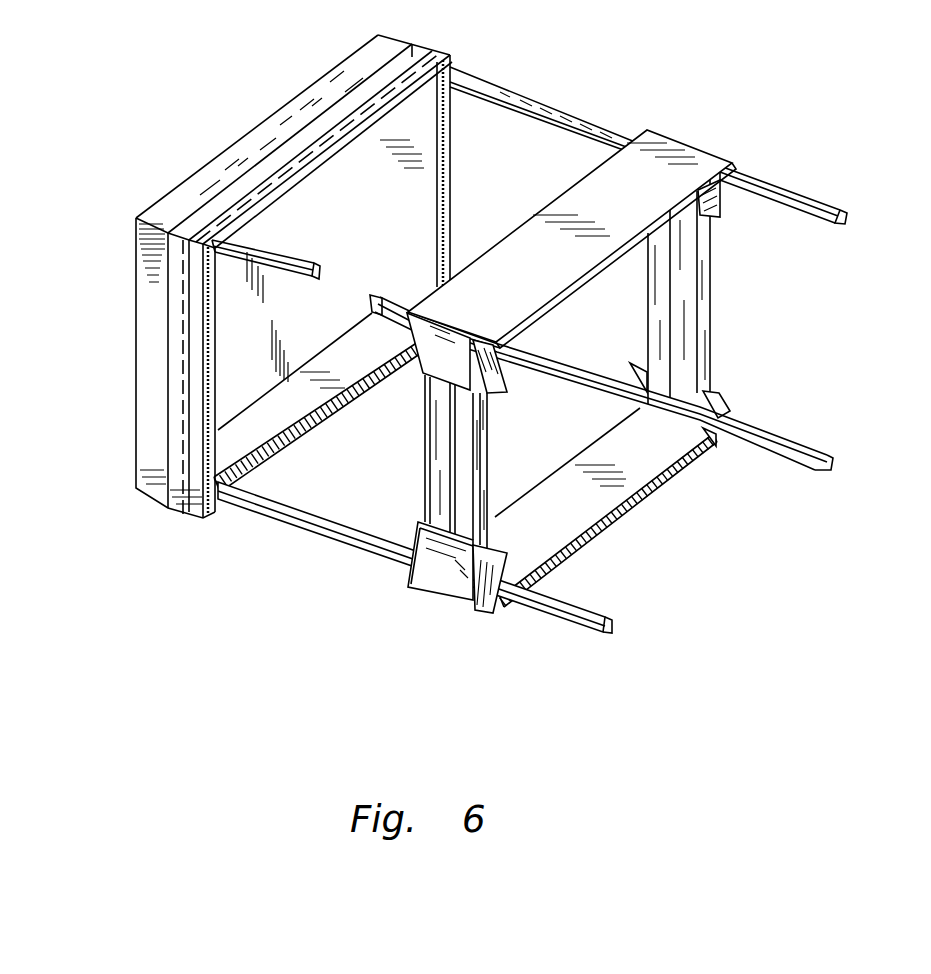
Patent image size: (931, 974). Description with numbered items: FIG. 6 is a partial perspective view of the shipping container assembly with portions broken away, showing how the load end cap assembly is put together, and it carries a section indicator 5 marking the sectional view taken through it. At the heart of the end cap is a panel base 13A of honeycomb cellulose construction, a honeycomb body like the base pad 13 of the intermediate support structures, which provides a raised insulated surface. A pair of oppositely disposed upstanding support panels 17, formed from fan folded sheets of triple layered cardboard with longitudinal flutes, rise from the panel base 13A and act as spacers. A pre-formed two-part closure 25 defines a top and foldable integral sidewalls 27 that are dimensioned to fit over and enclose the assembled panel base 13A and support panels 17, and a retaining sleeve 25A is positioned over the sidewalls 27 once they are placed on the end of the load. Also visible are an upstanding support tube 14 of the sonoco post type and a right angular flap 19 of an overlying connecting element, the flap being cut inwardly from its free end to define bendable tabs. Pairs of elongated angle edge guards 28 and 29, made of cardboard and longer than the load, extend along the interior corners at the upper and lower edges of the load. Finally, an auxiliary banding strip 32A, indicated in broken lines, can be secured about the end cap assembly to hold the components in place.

The honeycomb cellulose base pad 13 is at (555, 515).
The panel base 13A is at (262, 428).
The upstanding support tube 14 is at (463, 450).
The upstanding support panel 17 is at (400, 206).
The right angular flap 19 is at (451, 572).
The closure 25 is at (180, 203).
The retaining sleeve 25A is at (419, 58).
The foldable integral sidewall 27 is at (368, 56).
The elongated angle edge guard 28 is at (285, 256).
The elongated angle edge guard 29 is at (372, 322).
The auxiliary banding strip 32A is at (182, 418).
The section line for FIG. 5 is at (600, 358).